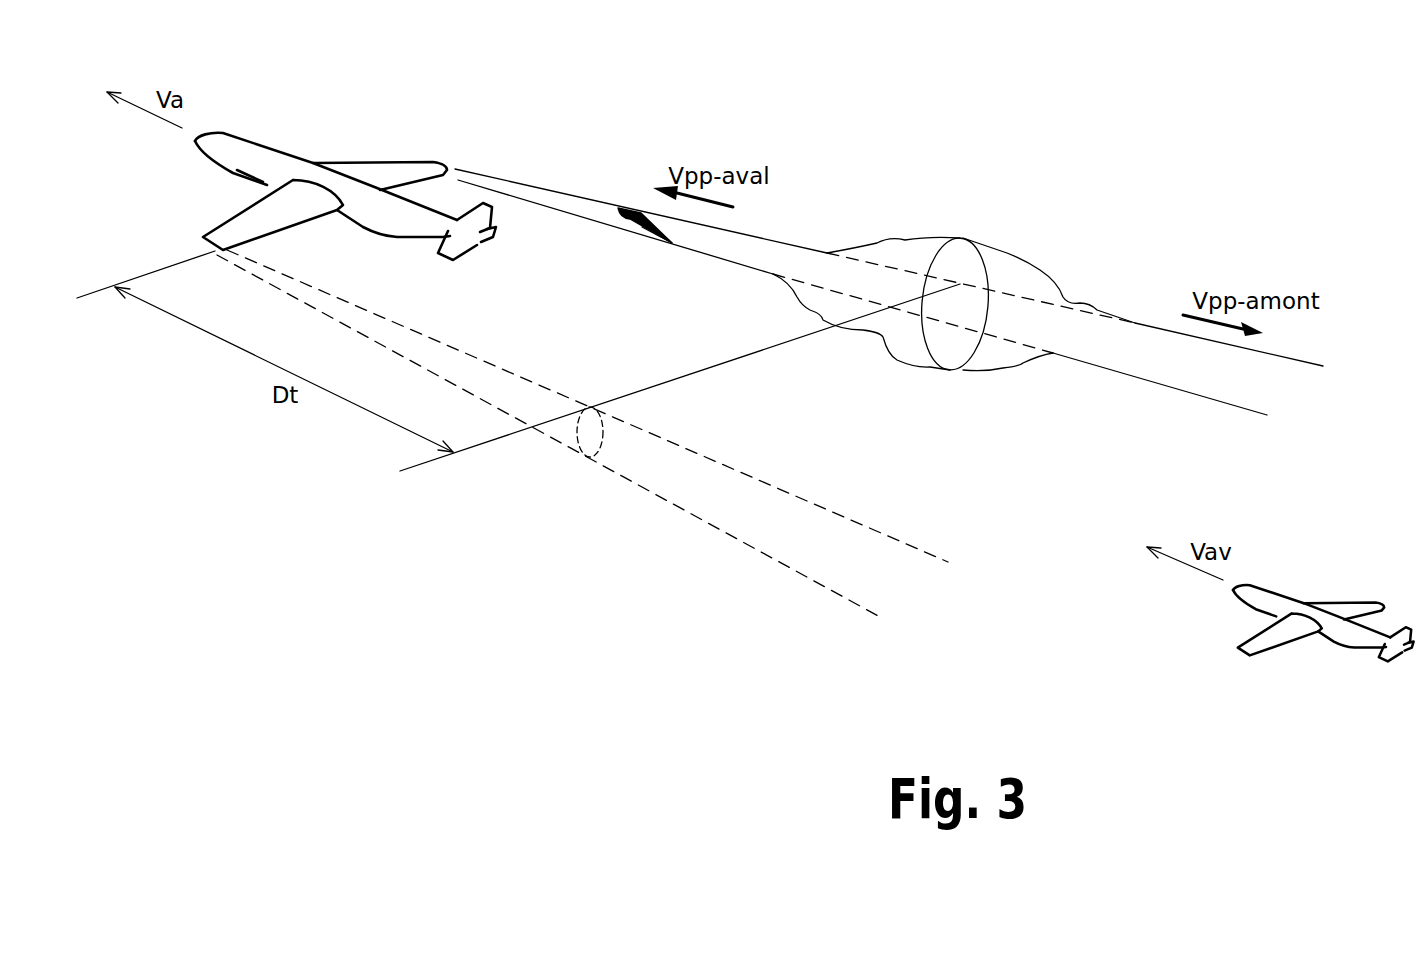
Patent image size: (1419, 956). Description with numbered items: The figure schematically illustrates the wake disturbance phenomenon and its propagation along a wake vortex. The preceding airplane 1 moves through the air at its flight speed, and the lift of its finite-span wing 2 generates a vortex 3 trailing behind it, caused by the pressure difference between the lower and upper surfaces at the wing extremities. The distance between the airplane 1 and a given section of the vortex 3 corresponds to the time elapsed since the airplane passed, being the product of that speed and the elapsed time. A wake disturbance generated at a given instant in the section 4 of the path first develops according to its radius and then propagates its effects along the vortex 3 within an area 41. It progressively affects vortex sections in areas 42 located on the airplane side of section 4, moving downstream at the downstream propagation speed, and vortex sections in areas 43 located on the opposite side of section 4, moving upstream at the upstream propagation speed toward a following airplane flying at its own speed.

The airplane 1 is at (223, 122).
The wing 2 is at (388, 172).
The vortex 3 is at (630, 207).
The section 4 is at (963, 238).
The area 41 is at (743, 313).
The areas 42 is at (962, 227).
The areas 43 is at (1116, 286).